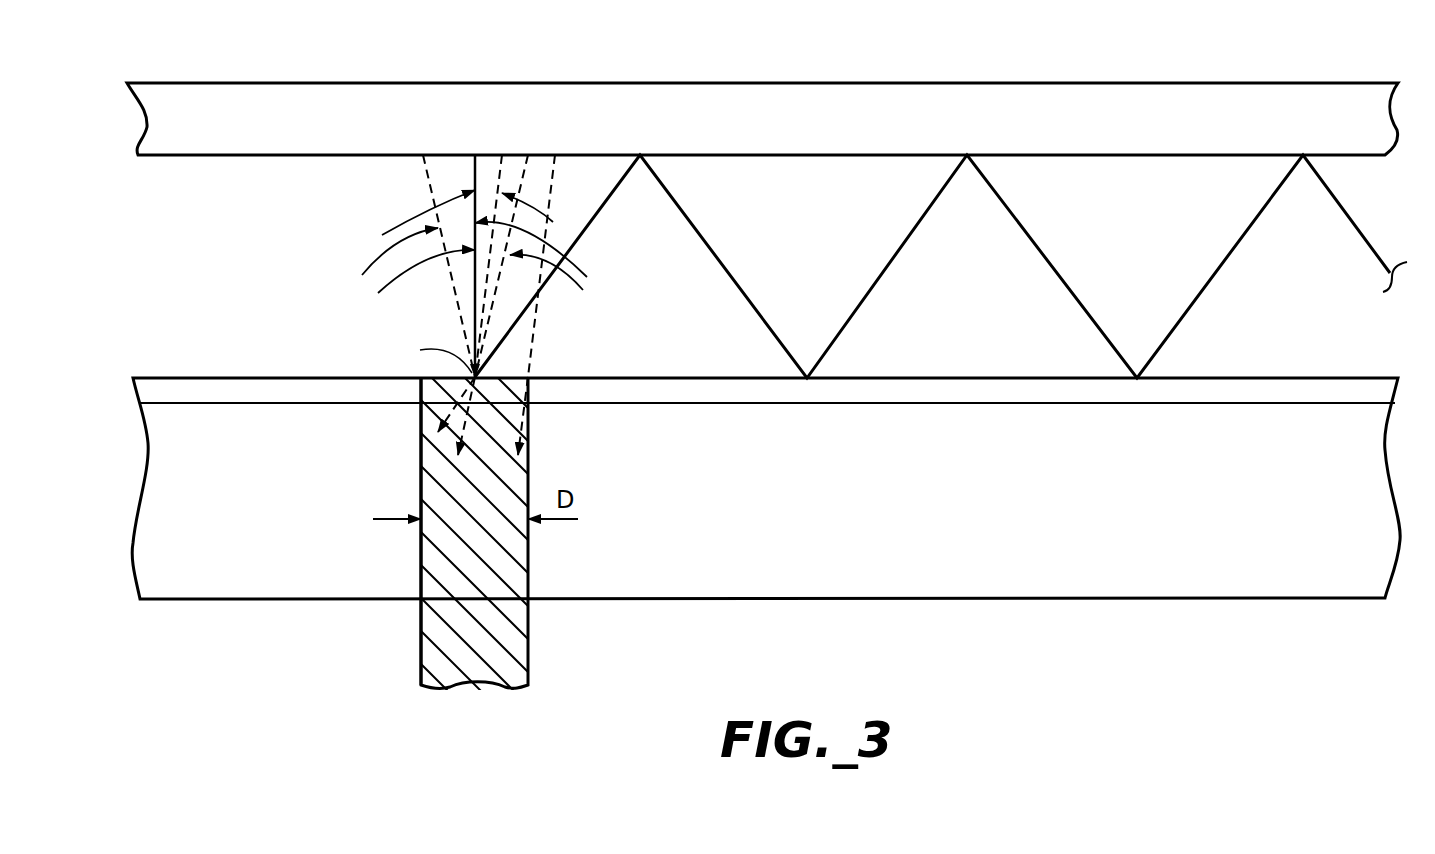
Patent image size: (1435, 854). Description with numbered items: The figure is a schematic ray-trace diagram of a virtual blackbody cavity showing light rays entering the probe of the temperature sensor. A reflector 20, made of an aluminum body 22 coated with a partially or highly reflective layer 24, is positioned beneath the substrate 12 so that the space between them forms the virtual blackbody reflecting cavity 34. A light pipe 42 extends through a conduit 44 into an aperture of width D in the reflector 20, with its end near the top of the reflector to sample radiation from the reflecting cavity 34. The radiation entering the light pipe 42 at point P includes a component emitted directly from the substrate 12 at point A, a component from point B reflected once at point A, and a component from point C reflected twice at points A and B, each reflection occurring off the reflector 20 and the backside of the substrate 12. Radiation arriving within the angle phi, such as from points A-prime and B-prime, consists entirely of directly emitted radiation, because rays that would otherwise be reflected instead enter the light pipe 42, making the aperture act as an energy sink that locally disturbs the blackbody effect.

The substrate 12 is at (1036, 98).
The reflector 20 is at (215, 307).
The aluminum body 22 is at (1343, 600).
The reflective layer 24 is at (1398, 391).
The reflecting cavity 34 is at (274, 291).
The light pipe 42 is at (530, 638).
The conduit 44 is at (421, 566).